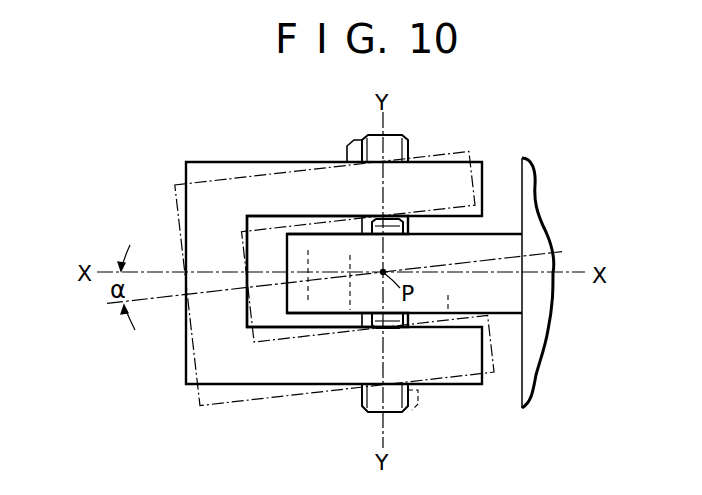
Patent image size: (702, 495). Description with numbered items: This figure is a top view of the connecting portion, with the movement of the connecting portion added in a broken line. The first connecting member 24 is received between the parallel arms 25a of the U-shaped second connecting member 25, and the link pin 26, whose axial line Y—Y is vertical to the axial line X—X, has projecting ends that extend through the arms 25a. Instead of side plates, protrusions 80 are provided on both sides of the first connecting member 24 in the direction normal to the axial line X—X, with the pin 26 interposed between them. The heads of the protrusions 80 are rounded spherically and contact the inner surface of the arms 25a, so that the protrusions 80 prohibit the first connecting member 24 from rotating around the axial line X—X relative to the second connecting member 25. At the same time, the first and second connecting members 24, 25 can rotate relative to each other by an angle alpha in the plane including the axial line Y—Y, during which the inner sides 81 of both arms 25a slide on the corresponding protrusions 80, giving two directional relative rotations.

The first connecting member 24 is at (496, 240).
The second connecting member 25 is at (179, 203).
The parallel arms 25a is at (283, 170).
The link pin 26 is at (403, 134).
The protrusions 80 is at (397, 220).
The inner sides 81 is at (308, 224).